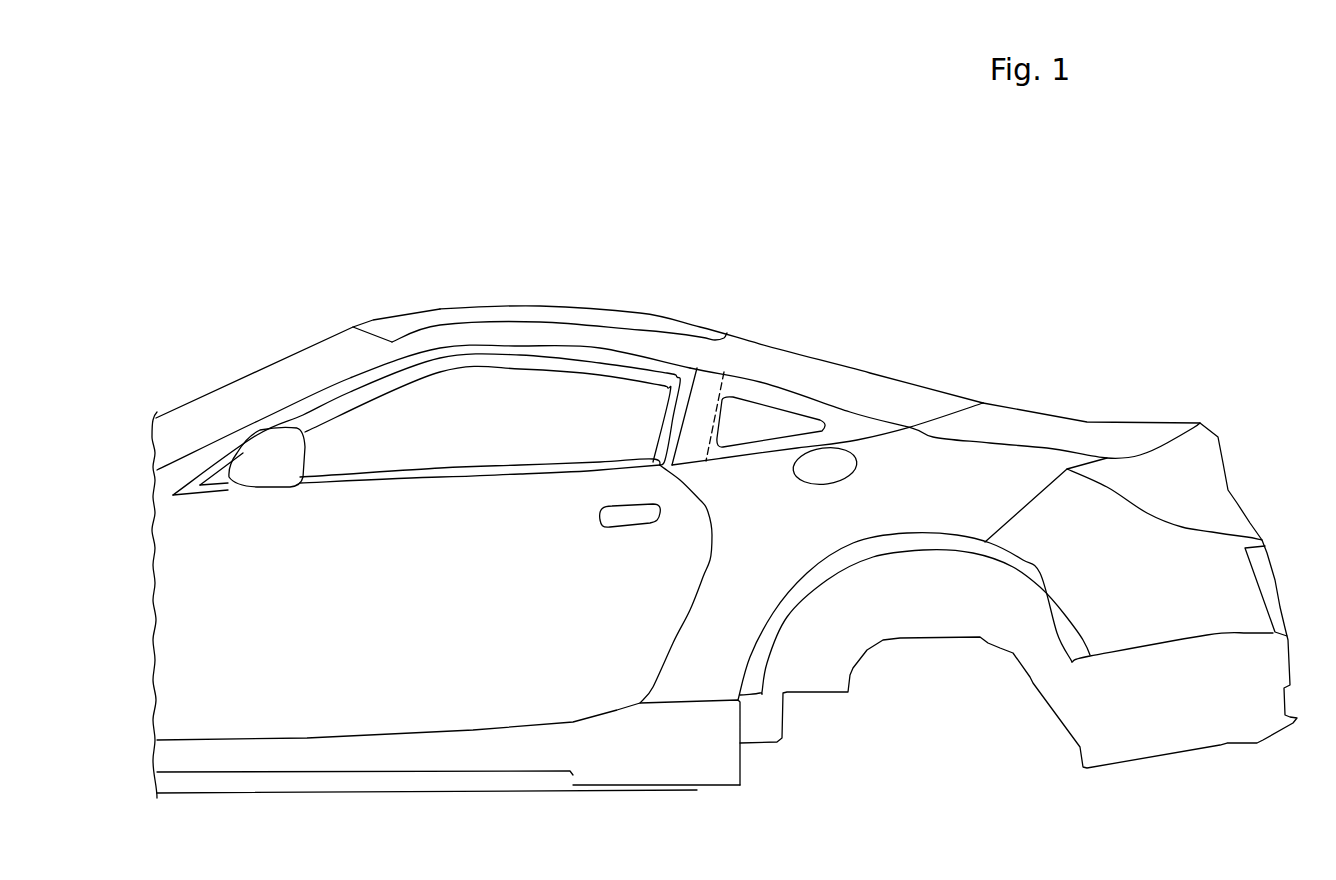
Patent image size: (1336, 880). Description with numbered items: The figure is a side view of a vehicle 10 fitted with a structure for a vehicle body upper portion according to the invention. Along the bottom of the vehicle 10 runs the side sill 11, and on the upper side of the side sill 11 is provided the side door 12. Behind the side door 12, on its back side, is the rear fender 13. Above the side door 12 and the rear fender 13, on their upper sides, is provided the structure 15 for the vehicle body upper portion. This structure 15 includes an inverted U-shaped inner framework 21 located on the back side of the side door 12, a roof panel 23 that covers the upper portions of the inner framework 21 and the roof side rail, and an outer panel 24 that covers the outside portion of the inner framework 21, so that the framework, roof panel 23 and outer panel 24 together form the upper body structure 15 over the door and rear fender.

The vehicle 10 is at (783, 270).
The side sill 11 is at (352, 783).
The side door 12 is at (389, 508).
The rear fender 13 is at (983, 468).
The structure for a vehicle body upper portion 15 is at (423, 344).
The inner framework 21 is at (713, 382).
The roof panel 23 is at (707, 353).
The outer panel 24 is at (693, 430).